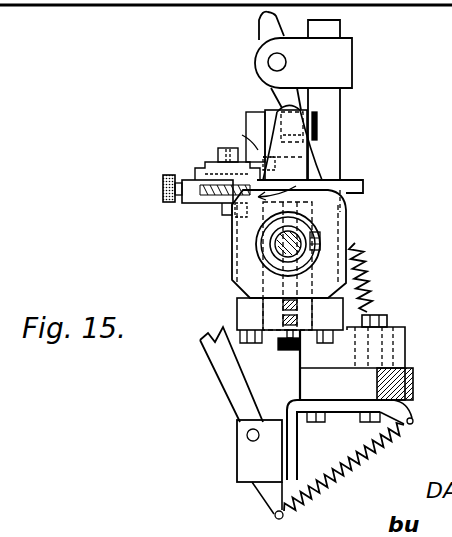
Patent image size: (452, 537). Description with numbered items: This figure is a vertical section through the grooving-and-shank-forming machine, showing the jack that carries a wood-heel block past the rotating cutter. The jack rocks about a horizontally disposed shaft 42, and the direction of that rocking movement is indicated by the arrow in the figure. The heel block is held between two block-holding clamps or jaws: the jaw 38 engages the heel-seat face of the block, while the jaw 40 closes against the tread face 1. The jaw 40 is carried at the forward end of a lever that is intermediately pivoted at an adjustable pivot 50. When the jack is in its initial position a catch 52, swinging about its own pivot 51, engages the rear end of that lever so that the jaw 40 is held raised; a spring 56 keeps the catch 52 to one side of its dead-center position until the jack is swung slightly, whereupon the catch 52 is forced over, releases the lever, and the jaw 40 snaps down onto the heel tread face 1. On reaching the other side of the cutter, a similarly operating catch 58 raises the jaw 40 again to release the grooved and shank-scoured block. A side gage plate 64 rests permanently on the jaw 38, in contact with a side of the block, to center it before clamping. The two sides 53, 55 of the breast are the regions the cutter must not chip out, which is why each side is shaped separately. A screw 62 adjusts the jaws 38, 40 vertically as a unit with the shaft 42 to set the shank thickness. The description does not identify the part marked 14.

The tread face 1 is at (277, 108).
The shaft 14 is at (290, 263).
The jaw 38 is at (346, 182).
The jaw 40 is at (290, 106).
The horizontally disposed shaft 42 is at (316, 236).
The pivot 50 is at (317, 127).
The pivot 51 is at (276, 62).
The catch 52 is at (263, 21).
The side of the breast 53 is at (262, 162).
The side of the breast 55 is at (312, 165).
The spring 56 is at (366, 302).
The catch 58 is at (222, 363).
The screw 62 is at (281, 352).
The side gage plate 64 is at (240, 150).